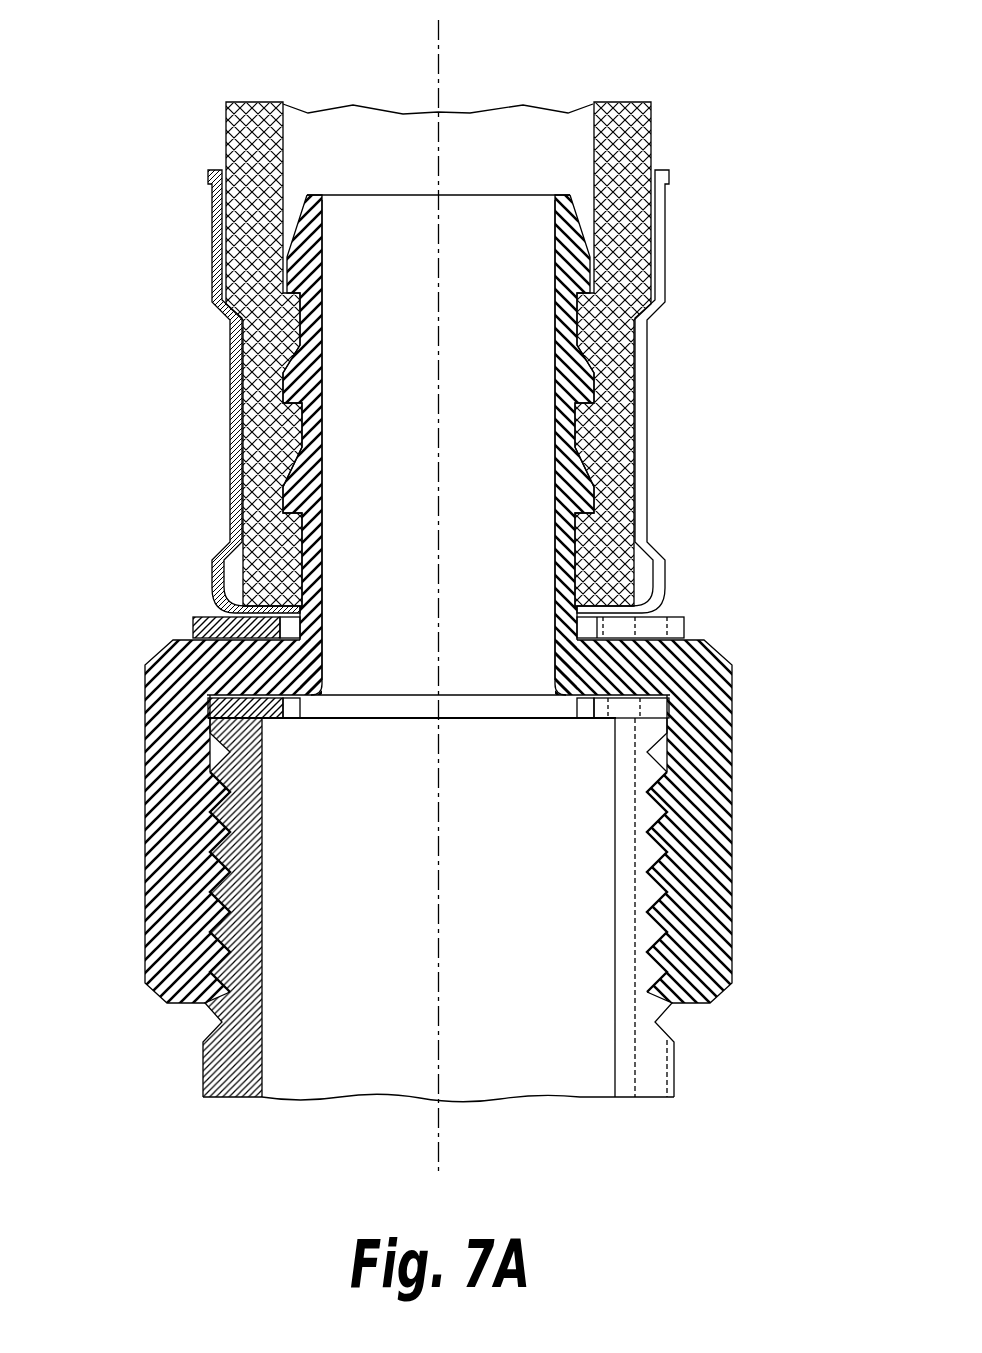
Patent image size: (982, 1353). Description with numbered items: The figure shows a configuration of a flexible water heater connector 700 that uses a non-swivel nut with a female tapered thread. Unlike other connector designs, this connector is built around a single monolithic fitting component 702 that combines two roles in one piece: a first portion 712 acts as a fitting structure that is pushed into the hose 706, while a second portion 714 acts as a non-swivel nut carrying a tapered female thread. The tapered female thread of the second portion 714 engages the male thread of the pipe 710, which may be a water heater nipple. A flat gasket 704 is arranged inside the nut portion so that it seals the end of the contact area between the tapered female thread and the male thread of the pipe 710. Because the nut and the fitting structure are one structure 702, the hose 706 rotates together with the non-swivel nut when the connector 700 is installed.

The flexible water heater connector 700 is at (720, 143).
The fitting component 702 is at (300, 432).
The flat gasket 704 is at (283, 698).
The hose 706 is at (245, 148).
The pipe 710 is at (203, 1073).
The first portion 712 is at (335, 203).
The second portion 714 is at (132, 628).